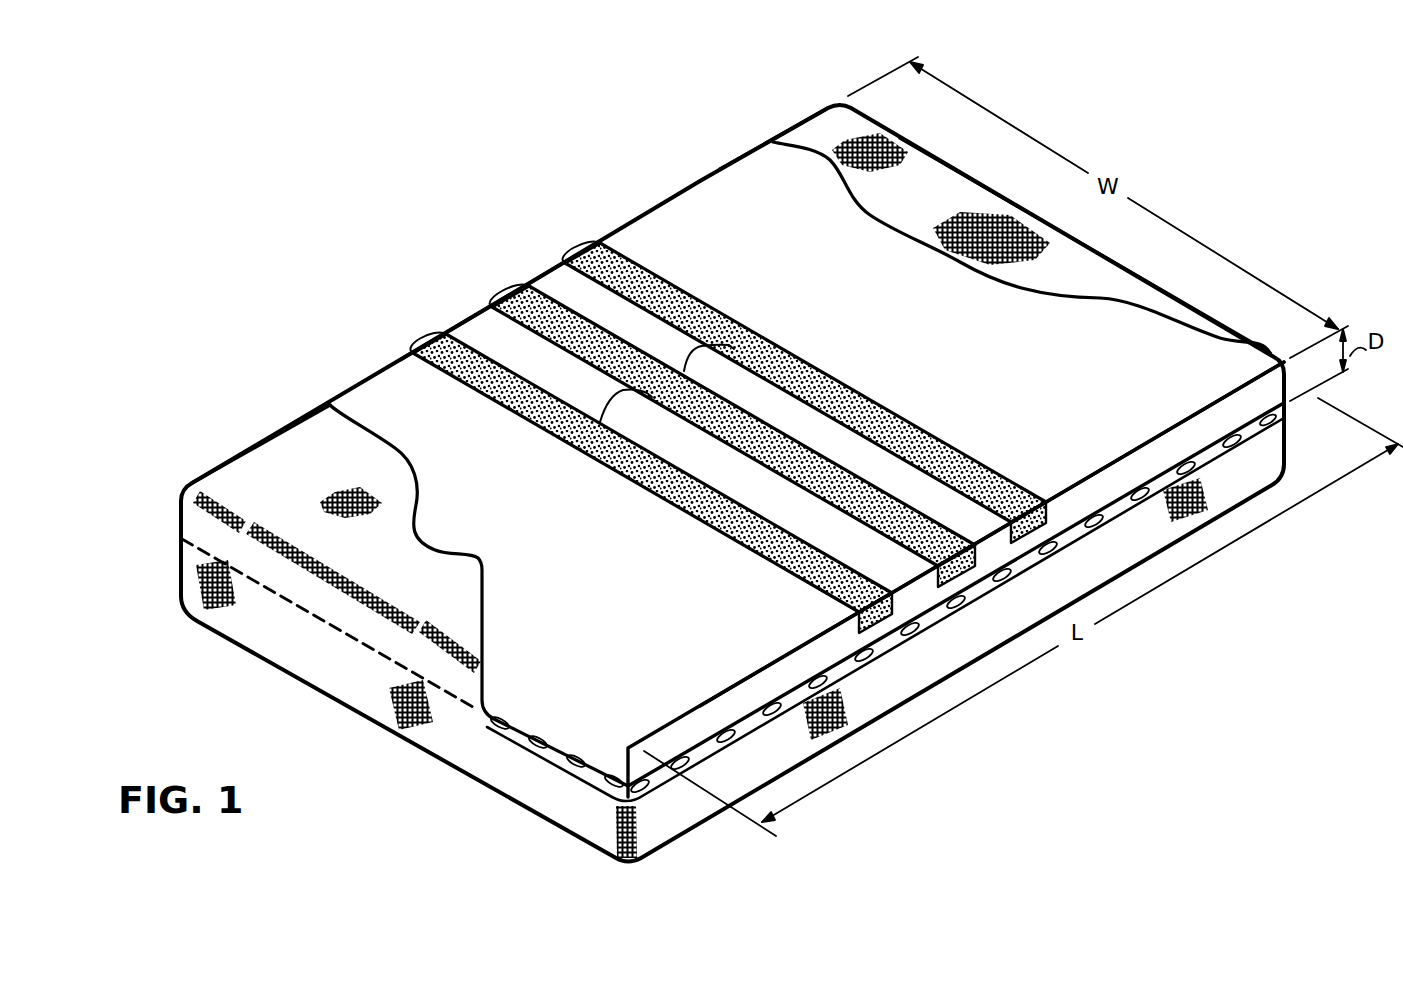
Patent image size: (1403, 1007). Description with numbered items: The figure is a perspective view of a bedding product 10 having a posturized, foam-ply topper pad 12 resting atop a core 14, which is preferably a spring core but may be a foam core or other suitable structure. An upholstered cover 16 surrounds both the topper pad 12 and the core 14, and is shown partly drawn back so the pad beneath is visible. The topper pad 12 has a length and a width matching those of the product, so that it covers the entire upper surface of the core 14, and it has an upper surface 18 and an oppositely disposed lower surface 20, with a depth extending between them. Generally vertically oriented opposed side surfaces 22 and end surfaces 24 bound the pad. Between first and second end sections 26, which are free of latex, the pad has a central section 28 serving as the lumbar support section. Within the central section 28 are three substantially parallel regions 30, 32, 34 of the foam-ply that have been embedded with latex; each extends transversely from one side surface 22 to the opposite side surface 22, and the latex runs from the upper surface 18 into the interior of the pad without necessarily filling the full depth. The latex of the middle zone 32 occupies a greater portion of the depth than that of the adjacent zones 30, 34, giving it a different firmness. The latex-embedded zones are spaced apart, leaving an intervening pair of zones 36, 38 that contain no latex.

The bedding product 10 is at (913, 825).
The topper pad 12 is at (897, 262).
The core 14 is at (556, 764).
The upholstered cover 16 is at (315, 646).
The upper surface 18 is at (872, 308).
The lower surface 20 is at (600, 775).
The side surfaces 22 is at (540, 274).
The end surfaces 24 is at (1118, 252).
The end sections 26 is at (392, 345).
The central section 28 is at (557, 211).
The latex-embedded zone 30 is at (641, 469).
The middle latex-embedded zone 32 is at (721, 422).
The latex-embedded zone 34 is at (792, 382).
The intervening zone 36 is at (597, 381).
The intervening zone 38 is at (705, 345).